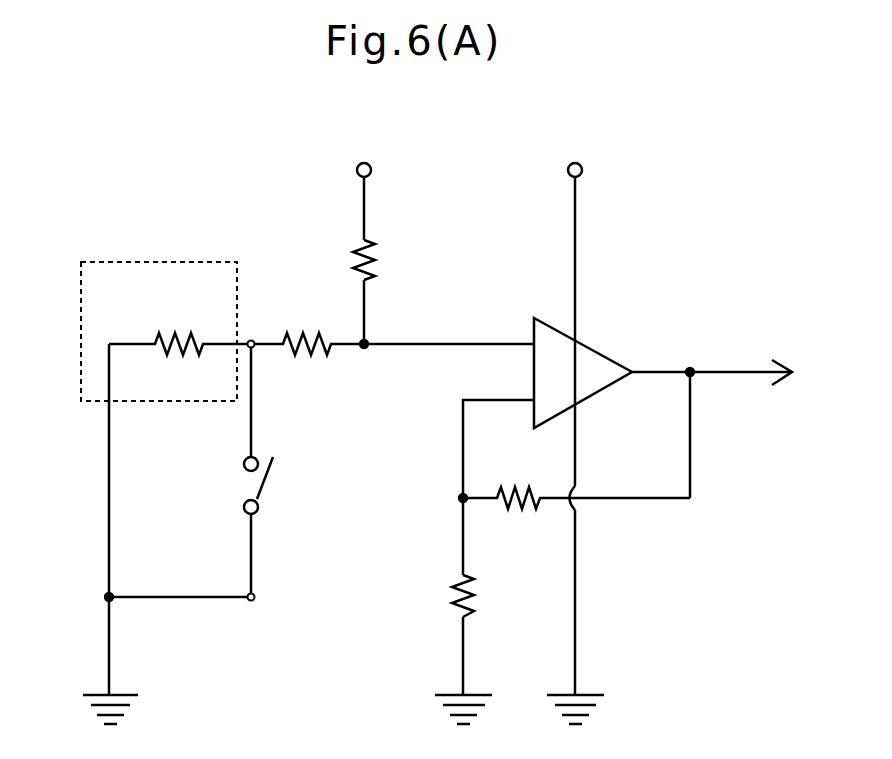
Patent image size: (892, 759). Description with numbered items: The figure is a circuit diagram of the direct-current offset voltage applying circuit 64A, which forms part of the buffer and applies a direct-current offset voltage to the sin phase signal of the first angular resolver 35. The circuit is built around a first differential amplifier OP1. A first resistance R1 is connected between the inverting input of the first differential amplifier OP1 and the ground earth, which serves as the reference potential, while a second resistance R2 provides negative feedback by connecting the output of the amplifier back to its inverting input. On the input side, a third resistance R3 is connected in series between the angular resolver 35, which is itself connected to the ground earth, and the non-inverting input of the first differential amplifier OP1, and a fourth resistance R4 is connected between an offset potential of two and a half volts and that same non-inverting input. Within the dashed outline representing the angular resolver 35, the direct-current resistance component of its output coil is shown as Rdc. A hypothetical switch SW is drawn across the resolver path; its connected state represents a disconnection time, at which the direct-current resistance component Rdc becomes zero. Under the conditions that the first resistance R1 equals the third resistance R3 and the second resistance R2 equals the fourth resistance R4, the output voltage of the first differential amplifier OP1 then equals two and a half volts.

The direct-current offset voltage applying circuit 64A is at (236, 226).
The first angular resolver 35 is at (148, 256).
The direct-current resistance component Rdc is at (178, 320).
The first resistance R1 is at (435, 586).
The second resistance R2 is at (576, 526).
The third resistance R3 is at (309, 321).
The fourth resistance R4 is at (337, 250).
The hypothetical switch SW is at (291, 485).
The first differential amplifier OP1 is at (555, 353).